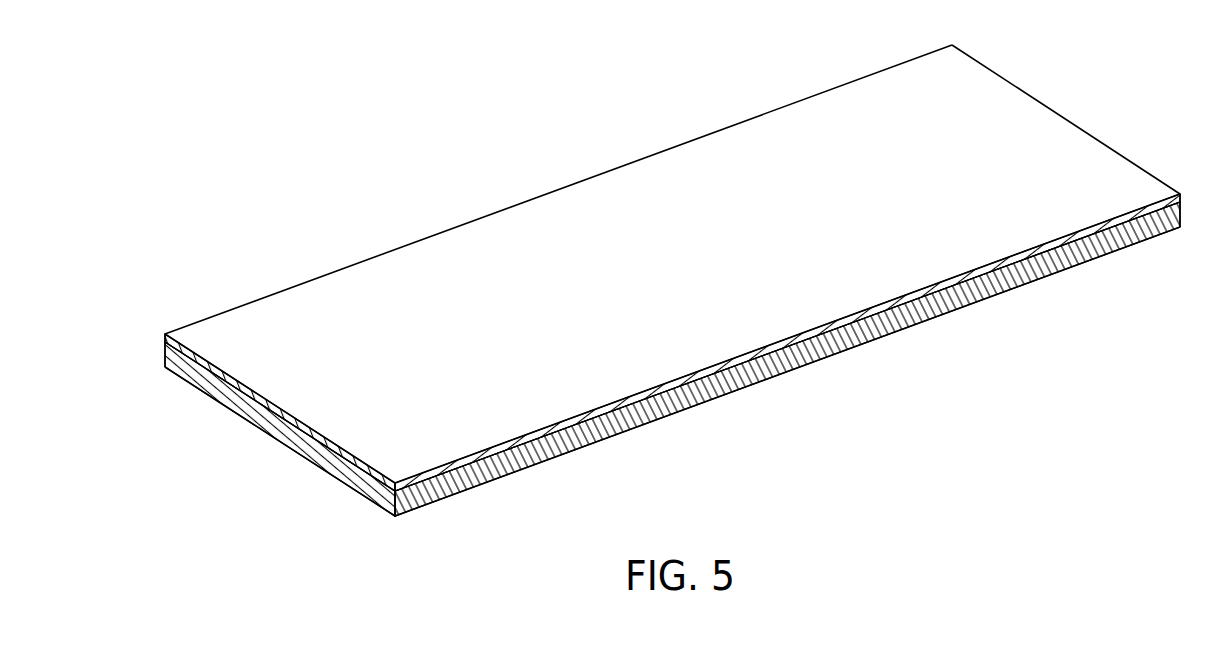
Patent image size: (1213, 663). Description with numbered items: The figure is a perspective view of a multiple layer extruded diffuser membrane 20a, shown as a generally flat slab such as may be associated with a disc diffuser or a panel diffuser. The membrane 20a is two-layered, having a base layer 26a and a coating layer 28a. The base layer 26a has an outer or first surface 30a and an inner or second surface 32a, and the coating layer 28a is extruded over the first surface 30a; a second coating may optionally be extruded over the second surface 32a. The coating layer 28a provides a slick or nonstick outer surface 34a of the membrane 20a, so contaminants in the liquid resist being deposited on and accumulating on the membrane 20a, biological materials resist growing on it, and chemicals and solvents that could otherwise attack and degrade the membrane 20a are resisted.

The membrane 20a is at (672, 274).
The base layer 26a is at (1017, 273).
The coating layer 28a is at (1083, 158).
The first surface 30a is at (635, 402).
The second surface 32a is at (583, 448).
The outer surface 34a is at (740, 238).